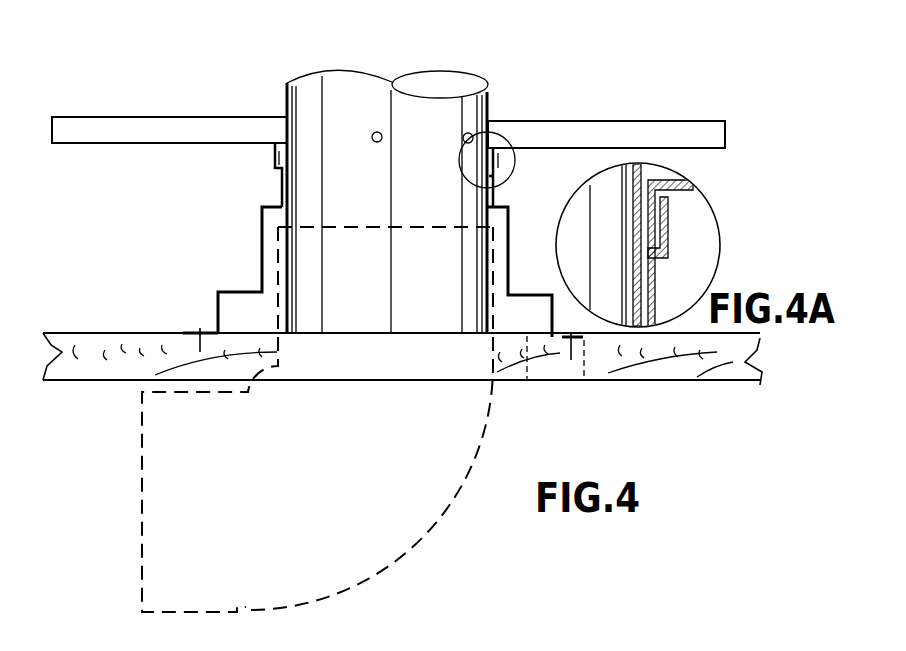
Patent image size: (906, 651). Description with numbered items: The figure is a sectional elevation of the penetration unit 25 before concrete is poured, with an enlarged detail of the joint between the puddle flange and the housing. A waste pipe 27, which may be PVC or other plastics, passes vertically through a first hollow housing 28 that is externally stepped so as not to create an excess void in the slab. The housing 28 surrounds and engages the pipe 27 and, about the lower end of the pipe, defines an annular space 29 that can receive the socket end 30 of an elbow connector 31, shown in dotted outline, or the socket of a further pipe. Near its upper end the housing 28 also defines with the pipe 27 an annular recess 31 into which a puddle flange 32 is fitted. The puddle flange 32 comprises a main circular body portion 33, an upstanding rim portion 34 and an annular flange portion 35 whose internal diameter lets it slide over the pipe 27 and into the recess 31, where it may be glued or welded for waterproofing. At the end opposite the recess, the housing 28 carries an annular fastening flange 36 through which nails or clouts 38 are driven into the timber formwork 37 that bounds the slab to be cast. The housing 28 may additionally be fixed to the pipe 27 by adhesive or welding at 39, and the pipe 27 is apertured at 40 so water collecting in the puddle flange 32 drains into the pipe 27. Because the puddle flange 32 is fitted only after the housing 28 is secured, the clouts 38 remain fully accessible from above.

In FIG. 4, the penetration unit 25 is at (180, 256).
In FIG. 4, the pipe 27 is at (478, 93).
In FIG. 4A, the pipe 27 is at (640, 286).
In FIG. 4, the first hollow housing 28 is at (250, 230).
In FIG. 4, the annular space 29 is at (527, 336).
In FIG. 4, the socket end 30 is at (496, 236).
In FIG. 4, the elbow connector 31 is at (458, 497).
In FIG. 4A, the elbow connector 31 is at (668, 240).
In FIG. 4, the puddle flange 32 is at (639, 122).
In FIG. 4, the main circular body portion 33 is at (565, 143).
In FIG. 4, the upstanding rim portion 34 is at (728, 136).
In FIG. 4A, the annular flange portion 35 is at (668, 212).
In FIG. 4, the annular fastening flange 36 is at (584, 340).
In FIG. 4, the formwork 37 is at (668, 380).
In FIG. 4, the clouts 38 is at (200, 333).
In FIG. 4, the adhesive or weld location 39 is at (278, 187).
In FIG. 4, the aperture 40 is at (373, 134).